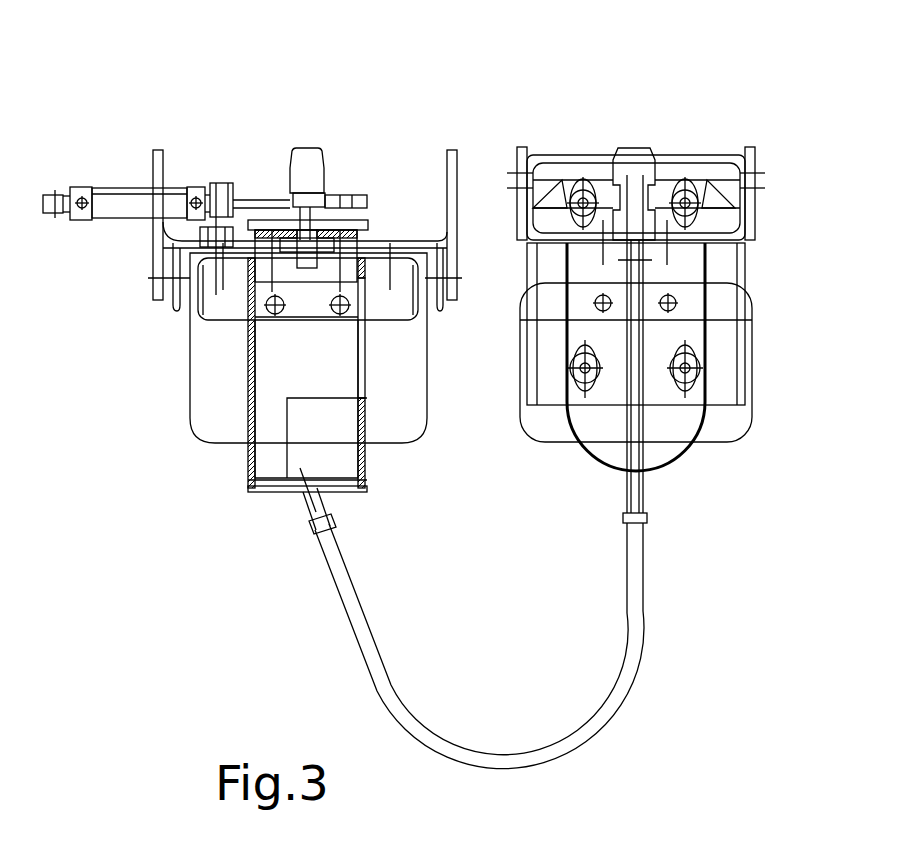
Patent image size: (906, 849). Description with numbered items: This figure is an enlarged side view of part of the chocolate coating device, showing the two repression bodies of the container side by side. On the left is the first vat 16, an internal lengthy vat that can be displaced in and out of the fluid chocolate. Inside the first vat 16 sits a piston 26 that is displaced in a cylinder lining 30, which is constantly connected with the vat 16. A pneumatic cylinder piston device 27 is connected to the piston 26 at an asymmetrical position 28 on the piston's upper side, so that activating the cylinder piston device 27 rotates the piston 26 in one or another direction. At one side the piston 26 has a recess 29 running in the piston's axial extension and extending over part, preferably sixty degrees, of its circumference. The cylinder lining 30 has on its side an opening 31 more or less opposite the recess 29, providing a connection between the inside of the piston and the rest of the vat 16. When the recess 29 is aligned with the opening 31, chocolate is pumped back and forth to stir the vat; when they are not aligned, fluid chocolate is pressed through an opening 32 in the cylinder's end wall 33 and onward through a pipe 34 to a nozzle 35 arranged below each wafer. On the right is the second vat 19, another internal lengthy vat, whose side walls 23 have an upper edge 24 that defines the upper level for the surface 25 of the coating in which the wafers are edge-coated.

The first vat 16 is at (190, 345).
The second vat 19 is at (720, 360).
The side walls 23 is at (560, 283).
The upper edge 24 is at (553, 176).
The surface 25 is at (603, 130).
The piston 26 is at (273, 328).
The pneumatic cylinder piston device 27 is at (122, 188).
The asymmetrical position 28 is at (350, 183).
The recess 29 is at (313, 425).
The cylinder lining 30 is at (248, 372).
The opening 31 is at (367, 343).
The opening 32 is at (282, 527).
The end wall 33 is at (265, 492).
The pipe 34 is at (345, 612).
The nozzle 35 is at (652, 150).